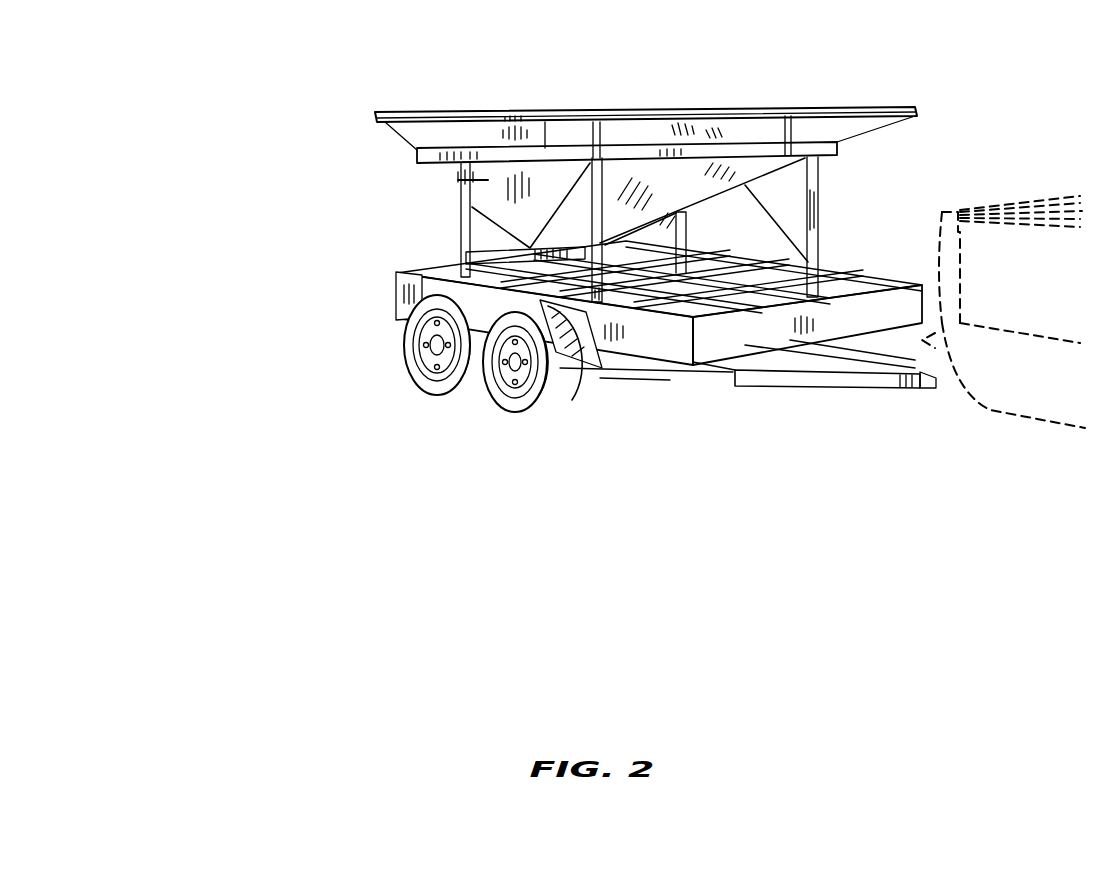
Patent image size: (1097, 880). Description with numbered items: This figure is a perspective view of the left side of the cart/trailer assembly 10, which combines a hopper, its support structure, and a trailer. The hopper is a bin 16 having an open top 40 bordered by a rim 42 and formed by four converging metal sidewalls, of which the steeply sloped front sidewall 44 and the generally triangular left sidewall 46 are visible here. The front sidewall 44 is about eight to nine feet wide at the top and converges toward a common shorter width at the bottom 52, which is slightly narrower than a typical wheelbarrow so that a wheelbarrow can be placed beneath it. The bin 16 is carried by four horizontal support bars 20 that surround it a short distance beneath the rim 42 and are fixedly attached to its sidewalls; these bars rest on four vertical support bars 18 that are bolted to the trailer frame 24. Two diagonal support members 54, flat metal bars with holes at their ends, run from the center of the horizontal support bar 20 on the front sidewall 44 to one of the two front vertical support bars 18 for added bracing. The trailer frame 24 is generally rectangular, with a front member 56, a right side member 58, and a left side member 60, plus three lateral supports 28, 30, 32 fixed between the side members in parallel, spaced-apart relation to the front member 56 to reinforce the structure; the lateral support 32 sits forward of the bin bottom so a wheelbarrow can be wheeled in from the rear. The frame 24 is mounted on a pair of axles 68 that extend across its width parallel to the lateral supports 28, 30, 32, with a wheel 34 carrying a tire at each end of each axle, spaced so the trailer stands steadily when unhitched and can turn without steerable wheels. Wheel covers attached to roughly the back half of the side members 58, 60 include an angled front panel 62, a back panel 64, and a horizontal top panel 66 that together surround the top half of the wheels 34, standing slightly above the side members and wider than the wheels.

The assembly 10 is at (284, 289).
The bin 16 is at (545, 147).
The vertical support bars 18 is at (460, 188).
The horizontal support bars 20 is at (597, 150).
The trailer frame 24 is at (757, 338).
The lateral support 28 is at (730, 296).
The lateral support 30 is at (695, 320).
The lateral support 32 is at (669, 298).
The wheels 34 is at (450, 394).
The open top 40 is at (532, 110).
The rim 42 is at (476, 112).
The front sidewall 44 is at (683, 135).
The left sidewall 46 is at (458, 180).
The bottom 52 is at (466, 258).
The diagonal support members 54 is at (813, 173).
The front member 56 is at (841, 372).
The right side member 58 is at (860, 280).
The left side member 60 is at (590, 378).
The angled front panel 62 is at (523, 398).
The back panel 64 is at (398, 318).
The horizontal top panel 66 is at (433, 352).
The axles 68 is at (468, 392).